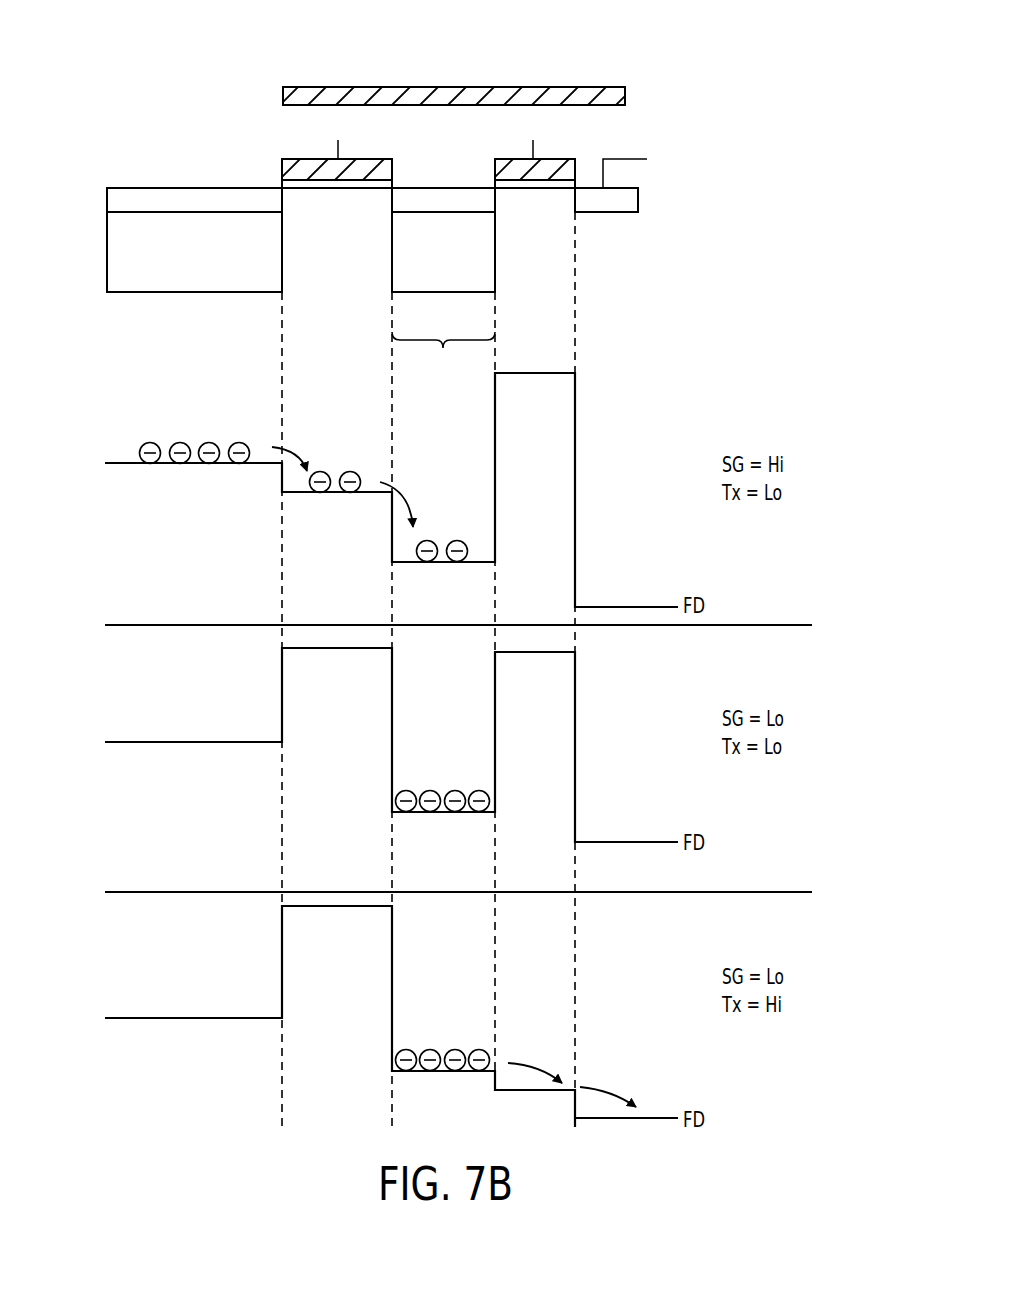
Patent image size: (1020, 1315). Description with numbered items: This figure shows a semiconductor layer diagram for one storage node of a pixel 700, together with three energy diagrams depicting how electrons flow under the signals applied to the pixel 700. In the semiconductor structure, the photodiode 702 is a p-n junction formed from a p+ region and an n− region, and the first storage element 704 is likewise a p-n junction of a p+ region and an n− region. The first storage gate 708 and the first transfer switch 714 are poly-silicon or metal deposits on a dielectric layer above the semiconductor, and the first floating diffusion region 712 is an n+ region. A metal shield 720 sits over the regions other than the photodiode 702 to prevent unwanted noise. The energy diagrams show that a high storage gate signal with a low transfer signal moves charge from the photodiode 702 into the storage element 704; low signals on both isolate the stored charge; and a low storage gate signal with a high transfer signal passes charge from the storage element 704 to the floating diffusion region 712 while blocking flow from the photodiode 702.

The pixel 700 is at (85, 109).
The photodiode 702 is at (143, 293).
The first storage element 704 is at (443, 312).
The first storage gate 708 is at (339, 181).
The first floating diffusion region 712 is at (620, 212).
The first transfer switch 714 is at (538, 181).
The metal shield 720 is at (468, 87).